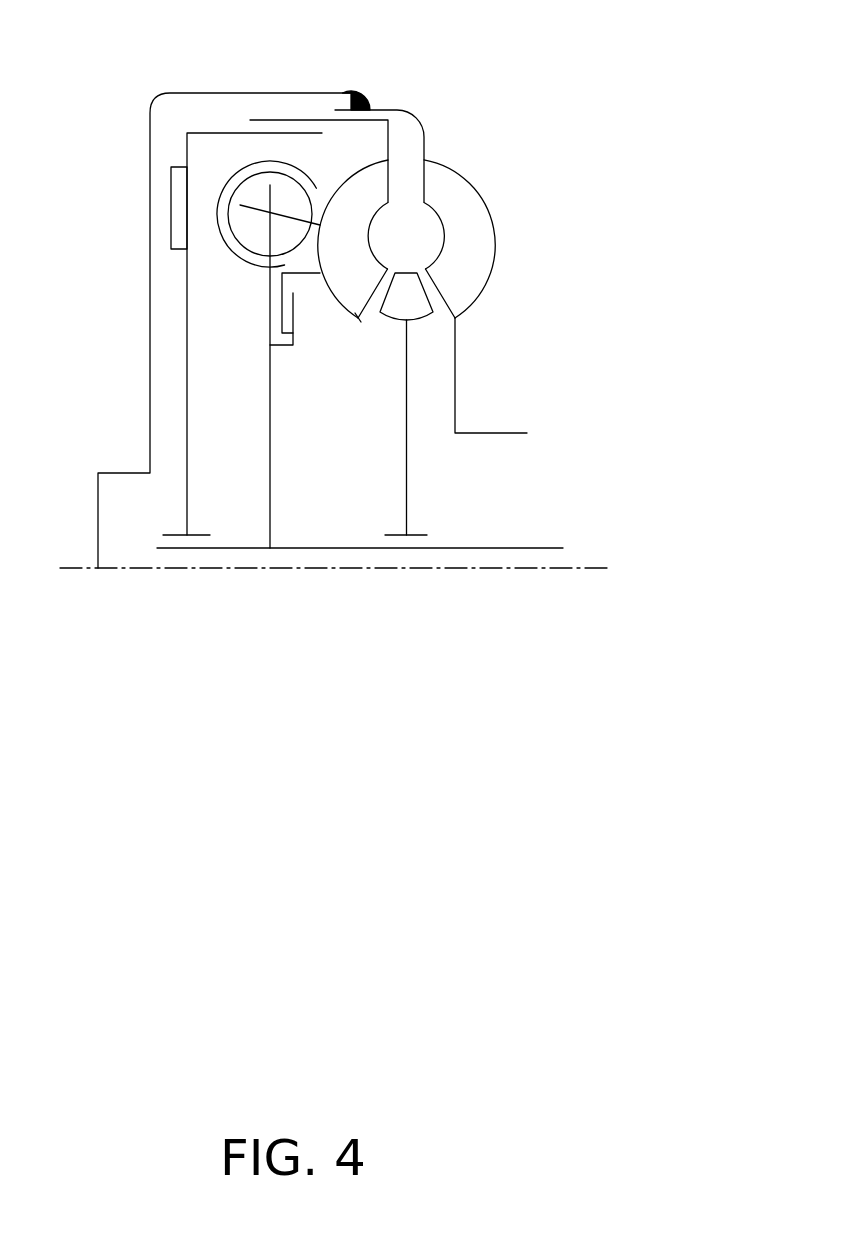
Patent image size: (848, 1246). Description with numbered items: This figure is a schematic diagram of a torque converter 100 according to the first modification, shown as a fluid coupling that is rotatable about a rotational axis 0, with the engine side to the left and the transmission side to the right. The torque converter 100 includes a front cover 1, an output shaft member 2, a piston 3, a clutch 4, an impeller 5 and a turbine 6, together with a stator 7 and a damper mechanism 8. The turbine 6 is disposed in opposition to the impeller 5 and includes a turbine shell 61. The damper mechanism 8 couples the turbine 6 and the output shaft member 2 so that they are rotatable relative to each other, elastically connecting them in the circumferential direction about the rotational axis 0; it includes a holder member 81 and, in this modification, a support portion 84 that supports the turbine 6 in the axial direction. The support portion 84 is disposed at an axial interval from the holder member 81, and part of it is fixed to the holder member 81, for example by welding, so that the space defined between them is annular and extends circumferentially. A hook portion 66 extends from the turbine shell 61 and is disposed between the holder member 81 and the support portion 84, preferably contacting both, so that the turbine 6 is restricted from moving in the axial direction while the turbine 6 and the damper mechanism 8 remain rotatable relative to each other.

The torque converter 100 is at (441, 77).
The front cover 1 is at (145, 200).
The output shaft member 2 is at (310, 548).
The piston 3 is at (185, 328).
The clutch 4 is at (175, 158).
The impeller 5 is at (499, 217).
The turbine 6 is at (345, 318).
The turbine shell 61 is at (332, 293).
The hook portion 66 is at (278, 303).
The stator 7 is at (420, 328).
The damper mechanism 8 is at (287, 157).
The holder member 81 is at (268, 437).
The support portion 84 is at (295, 323).
The rotational axis 0 is at (585, 568).